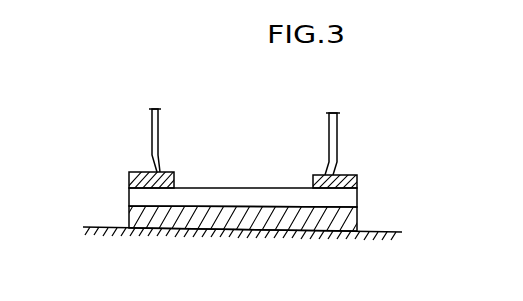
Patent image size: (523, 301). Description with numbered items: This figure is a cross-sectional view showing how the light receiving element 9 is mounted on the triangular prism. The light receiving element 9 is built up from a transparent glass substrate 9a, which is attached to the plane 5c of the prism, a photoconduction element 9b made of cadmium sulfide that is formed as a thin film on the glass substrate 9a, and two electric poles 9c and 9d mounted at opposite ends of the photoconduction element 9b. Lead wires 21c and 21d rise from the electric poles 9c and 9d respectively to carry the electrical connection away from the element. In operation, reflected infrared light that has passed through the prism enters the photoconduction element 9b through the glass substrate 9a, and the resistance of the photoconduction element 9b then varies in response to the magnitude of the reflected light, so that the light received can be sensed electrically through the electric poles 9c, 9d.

The light receiving element 9 is at (233, 198).
The transparent glass substrate 9a is at (331, 235).
The photoconduction element 9b is at (129, 196).
The electric pole 9c is at (130, 172).
The electric pole 9d is at (358, 180).
The lead wire 21c is at (158, 138).
The lead wire 21d is at (329, 142).
The plane of the prism 5c is at (402, 232).